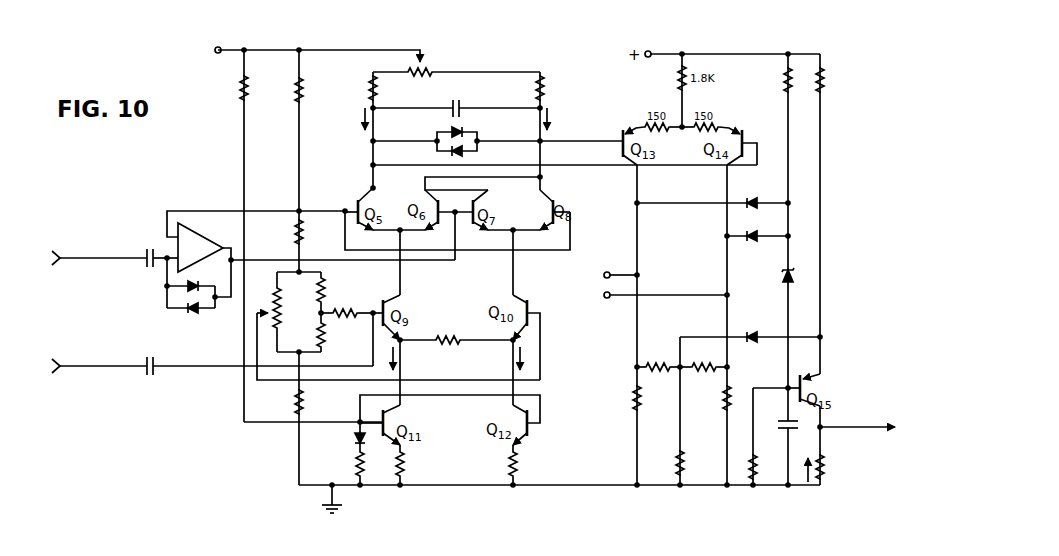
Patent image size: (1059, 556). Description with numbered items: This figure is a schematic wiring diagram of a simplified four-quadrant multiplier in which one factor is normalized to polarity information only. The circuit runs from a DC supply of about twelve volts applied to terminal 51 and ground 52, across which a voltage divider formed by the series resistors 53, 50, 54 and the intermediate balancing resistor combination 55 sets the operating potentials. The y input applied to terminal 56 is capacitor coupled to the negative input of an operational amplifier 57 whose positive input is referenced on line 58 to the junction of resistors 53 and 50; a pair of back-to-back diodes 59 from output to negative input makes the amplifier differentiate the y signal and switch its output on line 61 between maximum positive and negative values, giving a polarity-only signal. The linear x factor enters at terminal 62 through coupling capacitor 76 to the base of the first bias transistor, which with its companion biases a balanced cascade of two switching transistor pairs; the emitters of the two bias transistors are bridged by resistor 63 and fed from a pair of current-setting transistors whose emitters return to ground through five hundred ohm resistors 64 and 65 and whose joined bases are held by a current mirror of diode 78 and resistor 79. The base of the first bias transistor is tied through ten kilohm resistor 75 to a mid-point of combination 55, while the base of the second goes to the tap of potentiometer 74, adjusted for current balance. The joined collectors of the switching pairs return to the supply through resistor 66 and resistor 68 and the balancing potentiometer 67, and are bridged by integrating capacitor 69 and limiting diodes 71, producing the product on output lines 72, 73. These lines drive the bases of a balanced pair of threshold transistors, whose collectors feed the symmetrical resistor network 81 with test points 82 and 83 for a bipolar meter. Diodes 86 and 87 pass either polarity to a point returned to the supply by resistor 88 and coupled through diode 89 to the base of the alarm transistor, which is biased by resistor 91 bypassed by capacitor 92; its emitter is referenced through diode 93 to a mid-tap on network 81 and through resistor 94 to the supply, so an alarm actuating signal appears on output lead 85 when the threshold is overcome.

The resistor 50 is at (296, 234).
The terminal 51 is at (216, 46).
The ground 52 is at (330, 497).
The resistor 53 is at (296, 90).
The resistor 54 is at (294, 406).
The balancing resistor combination 55 is at (312, 323).
The terminal 56 is at (108, 260).
The operational amplifier 57 is at (197, 249).
The line 58 is at (232, 210).
The back-to-back diodes 59 is at (182, 298).
The line 61 is at (422, 262).
The terminal 62 is at (98, 362).
The resistor 63 is at (447, 346).
The resistor 64 is at (406, 457).
The resistor 65 is at (509, 462).
The resistor 66 is at (377, 92).
The balancing potentiometer 67 is at (425, 70).
The resistor 68 is at (536, 88).
The capacitor 69 is at (458, 103).
The back-to-back diodes 71 is at (465, 142).
The output line 72 is at (566, 141).
The output line 73 is at (604, 167).
The potentiometer 74 is at (248, 96).
The resistor 75 is at (347, 309).
The coupling capacitor 76 is at (156, 369).
The diode 78 is at (375, 446).
The resistor 79 is at (356, 462).
The symmetrical resistor network 81 is at (613, 389).
The test point 82 is at (603, 275).
The test point 83 is at (603, 295).
The output lead 85 is at (858, 431).
The diode 86 is at (757, 200).
The diode 87 is at (756, 241).
The resistor 88 is at (786, 84).
The diode 89 is at (784, 276).
The resistor 91 is at (757, 468).
The capacitor 92 is at (781, 424).
The diode 93 is at (752, 334).
The resistor 94 is at (823, 84).